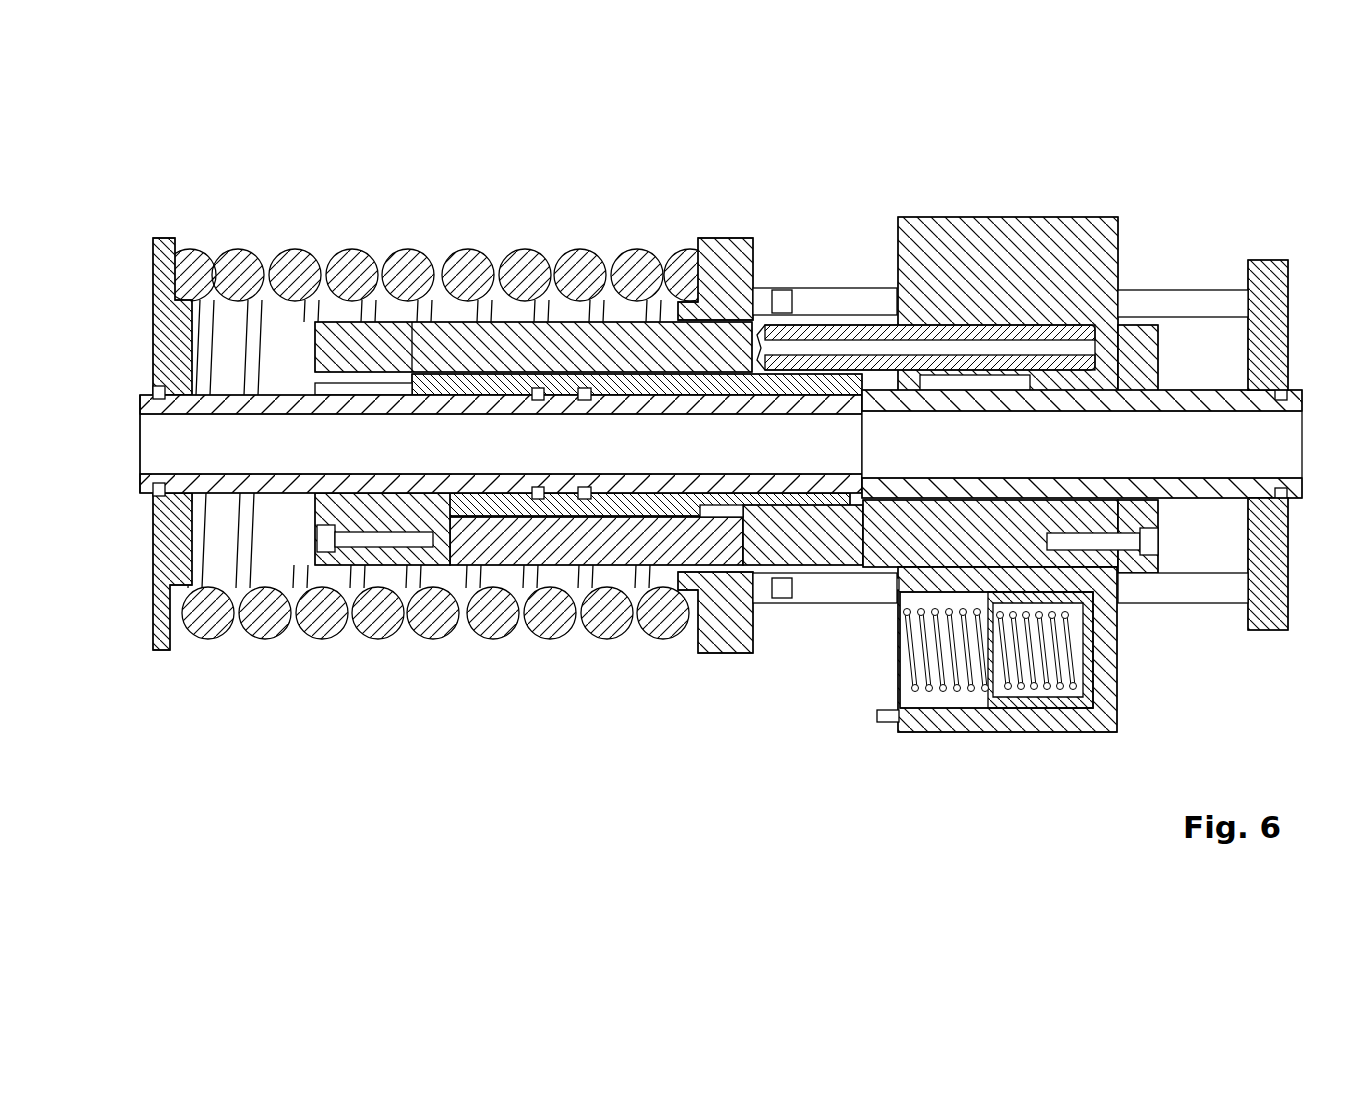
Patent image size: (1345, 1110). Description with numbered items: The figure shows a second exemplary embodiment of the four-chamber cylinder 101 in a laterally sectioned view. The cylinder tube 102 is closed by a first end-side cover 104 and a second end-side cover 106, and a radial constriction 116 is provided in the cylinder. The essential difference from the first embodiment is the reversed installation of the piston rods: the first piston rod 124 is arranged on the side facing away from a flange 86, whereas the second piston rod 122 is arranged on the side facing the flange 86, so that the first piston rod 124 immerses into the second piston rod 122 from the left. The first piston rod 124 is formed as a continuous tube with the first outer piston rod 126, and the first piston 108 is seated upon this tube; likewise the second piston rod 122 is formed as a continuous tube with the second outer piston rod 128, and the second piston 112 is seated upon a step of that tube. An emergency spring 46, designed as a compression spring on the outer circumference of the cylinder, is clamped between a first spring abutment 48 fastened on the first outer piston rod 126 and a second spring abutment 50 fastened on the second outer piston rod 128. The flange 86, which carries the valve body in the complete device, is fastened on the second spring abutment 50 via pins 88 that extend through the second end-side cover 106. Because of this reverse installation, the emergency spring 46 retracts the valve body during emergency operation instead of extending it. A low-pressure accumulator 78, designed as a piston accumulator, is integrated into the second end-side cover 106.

The four-chamber cylinder 101 is at (303, 116).
The second end-side cover 106 is at (1134, 207).
The pin 88 is at (1203, 305).
The first spring abutment 48 is at (178, 340).
The emergency spring 46 is at (519, 272).
The second spring abutment 50 is at (722, 275).
The cylinder tube 102 is at (655, 362).
The first end-side cover 104 is at (352, 522).
The first piston 108 is at (560, 518).
The radial constriction 116 is at (713, 512).
The second piston rod 122 is at (798, 503).
The second piston 112 is at (898, 503).
The low-pressure accumulator 78 is at (973, 745).
The flange 86 is at (1265, 615).
The first piston rod 124 is at (683, 458).
The first outer piston rod 126 is at (276, 458).
The second outer piston rod 128 is at (1053, 458).